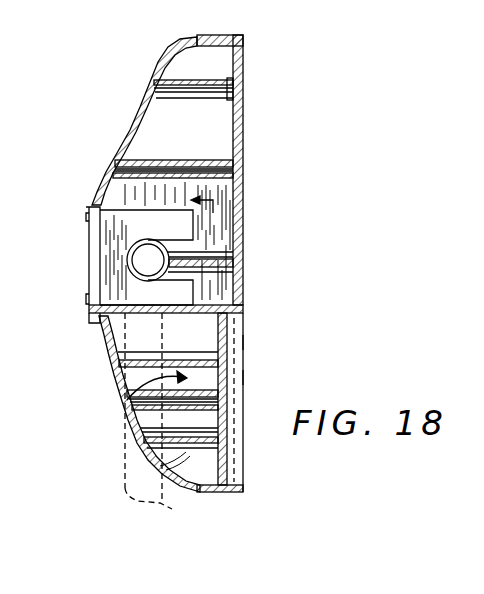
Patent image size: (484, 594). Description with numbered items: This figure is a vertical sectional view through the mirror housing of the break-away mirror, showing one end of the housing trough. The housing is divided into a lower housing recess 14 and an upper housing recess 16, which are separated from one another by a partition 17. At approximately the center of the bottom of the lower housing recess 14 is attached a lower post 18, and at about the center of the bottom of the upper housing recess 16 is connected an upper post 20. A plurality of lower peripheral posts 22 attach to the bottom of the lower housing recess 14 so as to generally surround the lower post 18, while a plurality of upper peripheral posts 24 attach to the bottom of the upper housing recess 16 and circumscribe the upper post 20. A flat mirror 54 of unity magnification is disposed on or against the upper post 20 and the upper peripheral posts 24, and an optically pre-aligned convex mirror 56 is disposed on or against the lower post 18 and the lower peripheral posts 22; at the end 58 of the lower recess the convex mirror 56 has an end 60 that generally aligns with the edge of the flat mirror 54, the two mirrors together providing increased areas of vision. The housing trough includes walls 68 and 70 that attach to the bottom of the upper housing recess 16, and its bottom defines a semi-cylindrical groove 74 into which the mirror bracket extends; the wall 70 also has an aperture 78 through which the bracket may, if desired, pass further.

The lower housing recess 14 is at (130, 406).
The upper housing recess 16 is at (213, 213).
The partition 17 is at (230, 324).
The lower post 18 is at (230, 443).
The upper post 20 is at (228, 163).
The lower peripheral posts 22 is at (226, 259).
The upper peripheral posts 24 is at (214, 90).
The flat mirror 54 is at (234, 220).
The convex mirror 56 is at (230, 444).
The end of the lower housing recess 58 is at (243, 343).
The end of the convex mirror 60 is at (243, 378).
The wall 68 is at (97, 207).
The wall 70 is at (127, 235).
The semi-cylindrical groove 74 is at (214, 249).
The aperture 78 is at (217, 243).